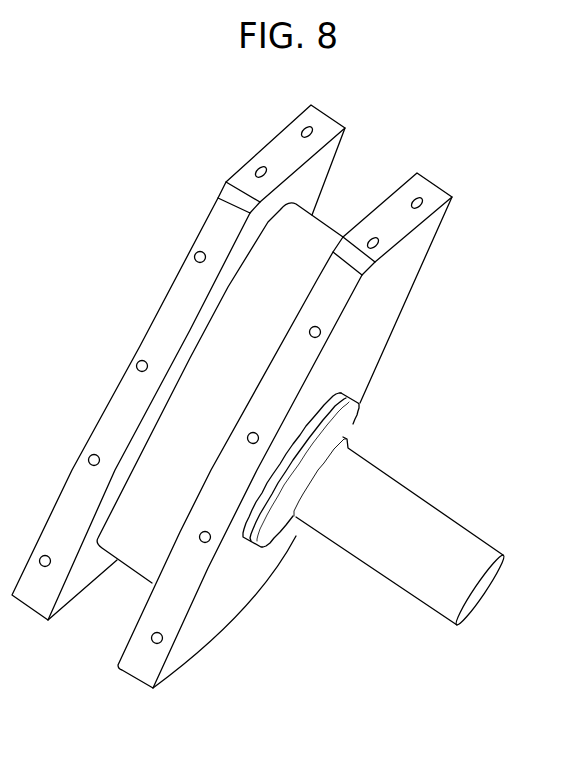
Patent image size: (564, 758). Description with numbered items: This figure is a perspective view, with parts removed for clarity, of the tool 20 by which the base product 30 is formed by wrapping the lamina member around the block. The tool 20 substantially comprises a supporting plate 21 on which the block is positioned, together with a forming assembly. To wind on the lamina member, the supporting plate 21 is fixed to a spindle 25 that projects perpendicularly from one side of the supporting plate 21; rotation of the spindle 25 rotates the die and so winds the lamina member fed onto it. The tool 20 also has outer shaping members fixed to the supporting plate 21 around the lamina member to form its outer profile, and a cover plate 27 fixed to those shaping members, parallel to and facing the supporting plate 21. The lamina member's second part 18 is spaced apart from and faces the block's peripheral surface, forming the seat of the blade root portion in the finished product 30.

The second part 18 is at (0, 221).
The tool 20 is at (469, 236).
The supporting plate 21 is at (197, 634).
The spindle 25 is at (405, 505).
The cover plate 27 is at (173, 299).
The product 30 is at (129, 575).